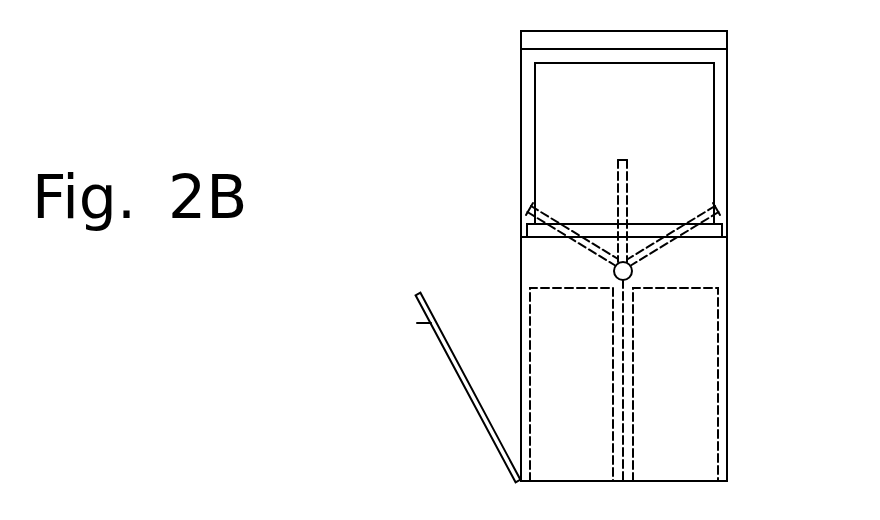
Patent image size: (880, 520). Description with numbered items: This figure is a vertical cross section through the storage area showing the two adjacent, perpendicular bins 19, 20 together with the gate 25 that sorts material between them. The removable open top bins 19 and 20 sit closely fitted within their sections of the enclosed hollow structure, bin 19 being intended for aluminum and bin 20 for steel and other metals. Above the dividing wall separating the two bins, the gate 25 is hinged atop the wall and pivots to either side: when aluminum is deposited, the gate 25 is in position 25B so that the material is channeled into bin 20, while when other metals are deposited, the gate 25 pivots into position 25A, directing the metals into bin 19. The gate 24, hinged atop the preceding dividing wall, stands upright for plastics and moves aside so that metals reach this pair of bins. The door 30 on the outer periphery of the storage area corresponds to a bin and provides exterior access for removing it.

The bin 19 is at (555, 353).
The bin 20 is at (690, 384).
The gate 24 is at (582, 116).
The gate 25 is at (627, 167).
The gate position 25A is at (657, 251).
The gate position 25B is at (523, 218).
The door 30 is at (452, 369).